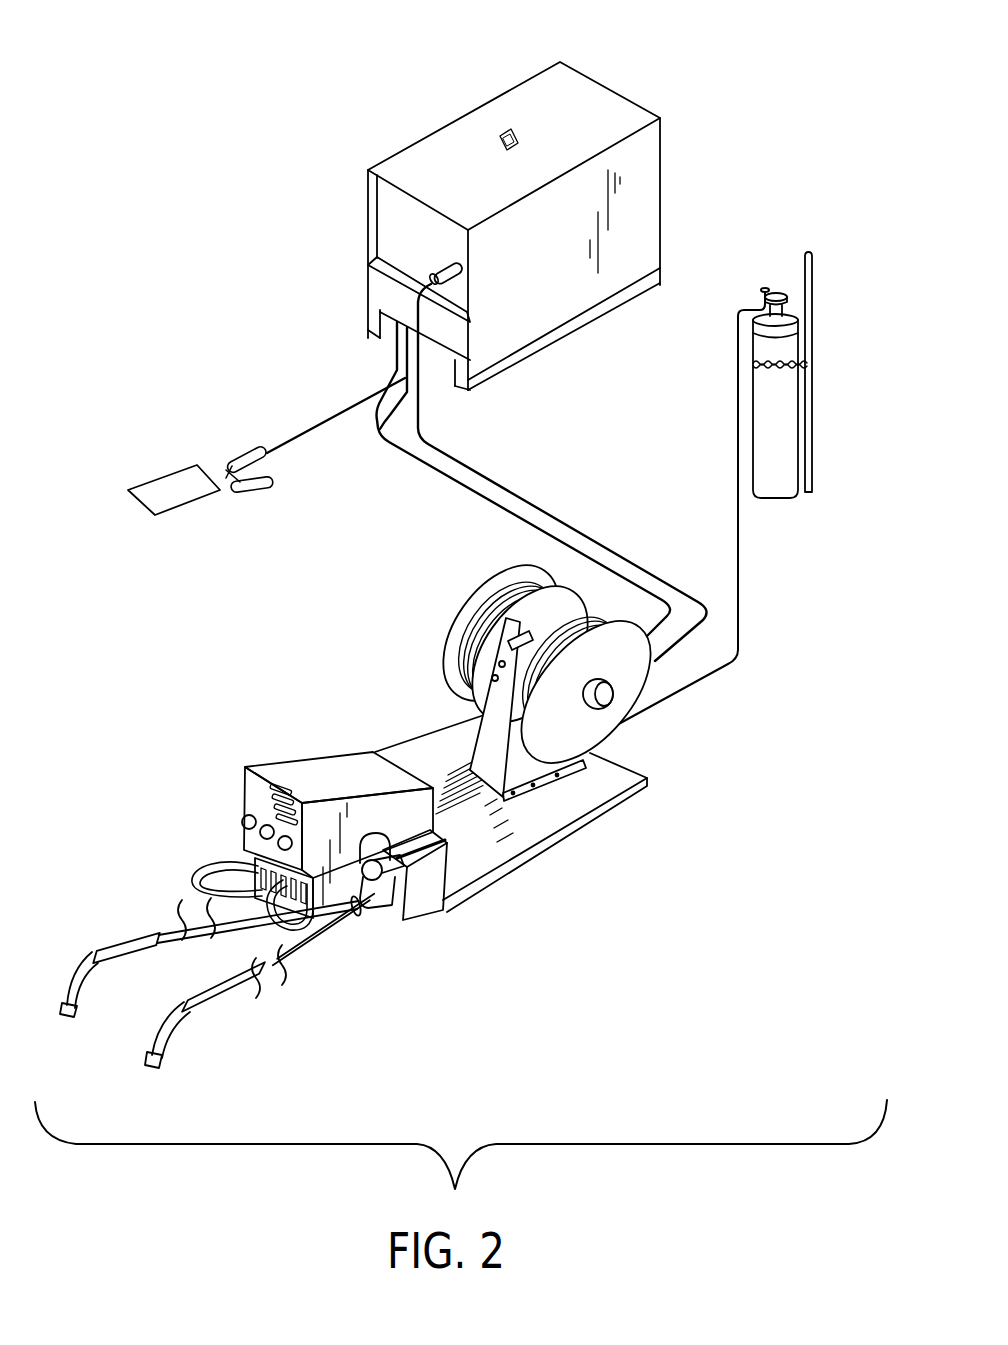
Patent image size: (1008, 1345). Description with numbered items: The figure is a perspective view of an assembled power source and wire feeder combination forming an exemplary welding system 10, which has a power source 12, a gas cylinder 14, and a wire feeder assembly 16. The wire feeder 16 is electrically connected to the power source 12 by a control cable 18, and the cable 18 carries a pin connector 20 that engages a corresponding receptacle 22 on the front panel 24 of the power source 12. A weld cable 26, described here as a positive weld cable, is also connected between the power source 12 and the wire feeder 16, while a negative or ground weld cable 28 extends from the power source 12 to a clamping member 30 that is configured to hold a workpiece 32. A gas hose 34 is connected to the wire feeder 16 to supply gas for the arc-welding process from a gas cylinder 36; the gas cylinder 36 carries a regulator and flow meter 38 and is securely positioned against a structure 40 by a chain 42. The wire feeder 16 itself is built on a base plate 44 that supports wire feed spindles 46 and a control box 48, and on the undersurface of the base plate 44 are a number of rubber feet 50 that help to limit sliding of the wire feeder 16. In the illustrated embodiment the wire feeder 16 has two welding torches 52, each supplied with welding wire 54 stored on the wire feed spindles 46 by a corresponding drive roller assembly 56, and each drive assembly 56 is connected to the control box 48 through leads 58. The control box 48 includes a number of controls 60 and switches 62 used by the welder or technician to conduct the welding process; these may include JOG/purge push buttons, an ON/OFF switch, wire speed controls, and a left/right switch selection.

The welding system 10 is at (400, 65).
The power source 12 is at (624, 72).
The gas cylinder 14 is at (825, 240).
The wire feeder assembly 16 is at (684, 756).
The control cable 18 is at (422, 406).
The pin connector 20 is at (455, 283).
The receptacle 22 is at (462, 268).
The front panel 24 is at (418, 236).
The weld cable 26 is at (390, 417).
The negative weld cable 28 is at (320, 418).
The clamping member 30 is at (265, 492).
The workpiece 32 is at (137, 483).
The gas hose 34 is at (740, 660).
The gas cylinder 36 is at (747, 412).
The regulator and flow meter 38 is at (746, 275).
The structure 40 is at (812, 400).
The chain 42 is at (804, 360).
The base plate 44 is at (534, 823).
The wire feed spindles 46 is at (572, 576).
The control box 48 is at (370, 730).
The rubber feet 50 is at (644, 790).
The welding torches 52 is at (200, 994).
The welding wire 54 is at (497, 593).
The drive roller assembly 56 is at (400, 905).
The leads 58 is at (266, 936).
The controls 60 is at (256, 878).
The switches 62 is at (235, 809).